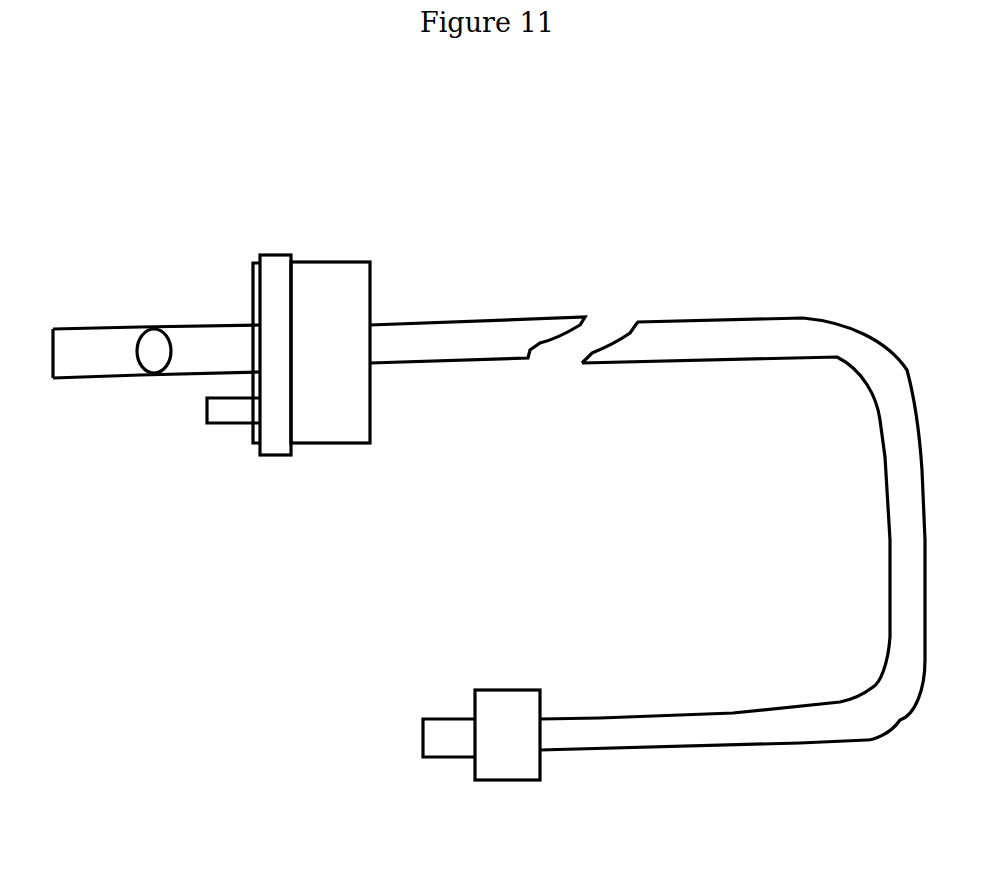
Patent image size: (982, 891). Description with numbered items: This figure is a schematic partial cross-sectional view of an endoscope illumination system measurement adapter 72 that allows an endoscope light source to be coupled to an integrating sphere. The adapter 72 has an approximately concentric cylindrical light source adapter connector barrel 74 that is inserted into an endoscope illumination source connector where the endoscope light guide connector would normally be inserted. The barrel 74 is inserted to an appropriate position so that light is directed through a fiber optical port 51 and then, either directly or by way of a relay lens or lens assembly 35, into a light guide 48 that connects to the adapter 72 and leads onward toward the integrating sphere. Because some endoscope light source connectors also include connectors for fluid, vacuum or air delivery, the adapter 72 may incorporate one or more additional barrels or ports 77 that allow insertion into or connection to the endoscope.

The fiber optical port 51 is at (50, 352).
The light source adapter connector barrel 74 is at (84, 322).
The relay lens or lens assembly 35 is at (137, 326).
The endoscope illumination system measurement adapter 72 is at (263, 244).
The barrel or port 77 is at (207, 423).
The light guide 48 is at (484, 302).